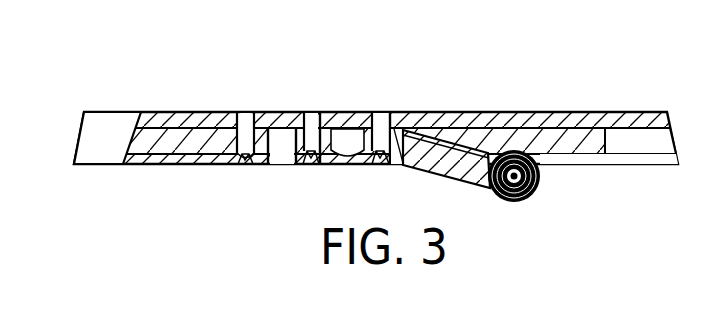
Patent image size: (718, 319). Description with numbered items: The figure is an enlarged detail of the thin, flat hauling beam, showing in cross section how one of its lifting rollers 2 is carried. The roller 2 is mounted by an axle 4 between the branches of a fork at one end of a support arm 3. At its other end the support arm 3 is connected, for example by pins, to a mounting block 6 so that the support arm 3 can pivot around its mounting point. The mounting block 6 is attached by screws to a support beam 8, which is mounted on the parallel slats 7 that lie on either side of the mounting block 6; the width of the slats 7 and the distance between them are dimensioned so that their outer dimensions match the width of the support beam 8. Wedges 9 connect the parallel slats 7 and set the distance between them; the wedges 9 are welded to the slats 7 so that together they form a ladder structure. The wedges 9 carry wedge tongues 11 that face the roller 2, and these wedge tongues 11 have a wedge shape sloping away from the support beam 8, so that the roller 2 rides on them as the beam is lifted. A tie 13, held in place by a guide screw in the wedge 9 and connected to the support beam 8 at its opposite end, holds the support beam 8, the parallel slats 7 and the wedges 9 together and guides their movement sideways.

The roller 2 is at (540, 180).
The support arm 3 is at (460, 188).
The axle 4 is at (525, 197).
The mounting block 6 is at (343, 128).
The parallel slat 7 is at (103, 145).
The support beam 8 is at (590, 112).
The wedge 9 is at (640, 141).
The wedge tongue 11 is at (472, 128).
The tie 13 is at (178, 148).